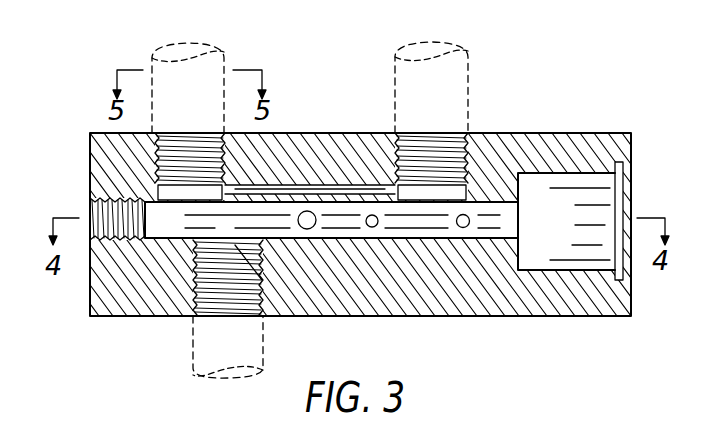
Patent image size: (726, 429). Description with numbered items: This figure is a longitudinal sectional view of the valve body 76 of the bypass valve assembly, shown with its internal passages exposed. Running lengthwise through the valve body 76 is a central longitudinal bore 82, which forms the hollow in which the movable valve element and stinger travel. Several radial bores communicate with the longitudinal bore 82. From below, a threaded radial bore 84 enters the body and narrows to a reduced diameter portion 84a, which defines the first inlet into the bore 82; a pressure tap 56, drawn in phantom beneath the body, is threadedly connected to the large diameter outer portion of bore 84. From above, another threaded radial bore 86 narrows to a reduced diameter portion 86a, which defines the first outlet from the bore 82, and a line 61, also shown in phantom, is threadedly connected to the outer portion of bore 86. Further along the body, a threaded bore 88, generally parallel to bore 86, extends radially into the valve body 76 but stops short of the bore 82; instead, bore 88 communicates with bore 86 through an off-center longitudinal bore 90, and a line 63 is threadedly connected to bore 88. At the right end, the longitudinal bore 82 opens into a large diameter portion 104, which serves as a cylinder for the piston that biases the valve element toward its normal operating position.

The valve body 76 is at (560, 133).
The threaded radial bore 86 is at (168, 138).
The reduced diameter portion 86a is at (197, 189).
The threaded bore 88 is at (466, 133).
The off-center longitudinal bore 90 is at (270, 188).
The threaded radial bore 84 is at (190, 318).
The reduced diameter portion 84a is at (262, 280).
The central longitudinal bore 82 is at (452, 236).
The large diameter portion 104 is at (569, 266).
The line 61 is at (226, 52).
The line 63 is at (470, 70).
The pressure tap 56 is at (193, 352).